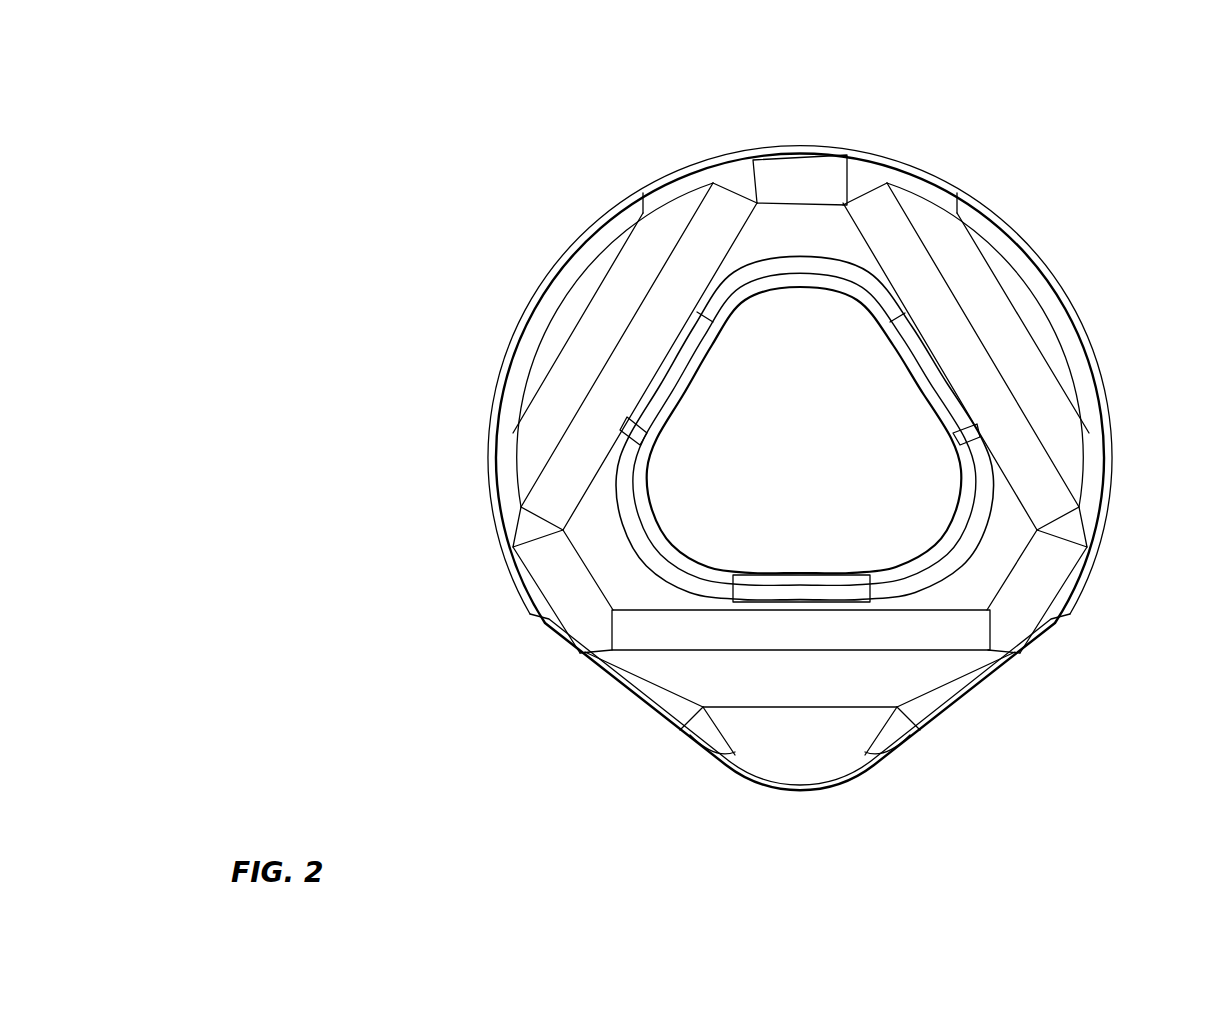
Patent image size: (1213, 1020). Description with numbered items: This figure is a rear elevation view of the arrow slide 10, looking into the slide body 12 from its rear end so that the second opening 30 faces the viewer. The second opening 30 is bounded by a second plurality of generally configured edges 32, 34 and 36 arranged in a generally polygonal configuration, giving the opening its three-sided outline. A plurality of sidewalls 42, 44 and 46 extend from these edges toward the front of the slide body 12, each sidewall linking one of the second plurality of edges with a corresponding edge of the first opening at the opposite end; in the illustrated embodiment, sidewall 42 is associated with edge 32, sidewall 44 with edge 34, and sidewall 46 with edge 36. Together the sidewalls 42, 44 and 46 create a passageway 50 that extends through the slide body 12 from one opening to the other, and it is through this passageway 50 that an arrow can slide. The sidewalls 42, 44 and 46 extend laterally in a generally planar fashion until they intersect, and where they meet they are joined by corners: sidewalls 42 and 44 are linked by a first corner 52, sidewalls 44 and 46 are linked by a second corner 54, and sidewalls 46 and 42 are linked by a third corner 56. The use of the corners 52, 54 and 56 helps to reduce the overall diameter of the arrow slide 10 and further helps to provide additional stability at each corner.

The arrow slide 10 is at (858, 130).
The slide body 12 is at (972, 204).
The second opening 30 is at (962, 588).
The edge 32 is at (797, 588).
The edge 34 is at (665, 357).
The edge 36 is at (927, 350).
The sidewall 42 is at (787, 573).
The sidewall 44 is at (647, 427).
The sidewall 46 is at (940, 397).
The passageway 50 is at (804, 430).
The first corner 52 is at (650, 540).
The second corner 54 is at (787, 247).
The third corner 56 is at (943, 527).